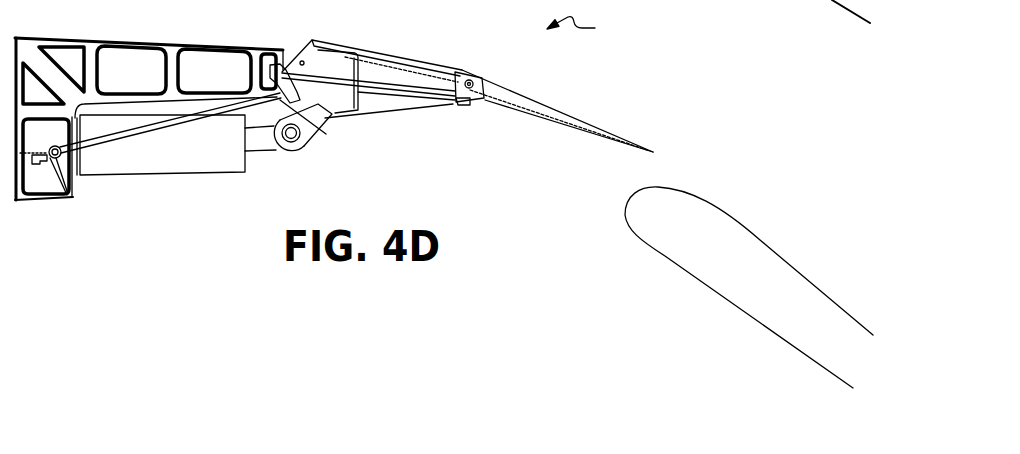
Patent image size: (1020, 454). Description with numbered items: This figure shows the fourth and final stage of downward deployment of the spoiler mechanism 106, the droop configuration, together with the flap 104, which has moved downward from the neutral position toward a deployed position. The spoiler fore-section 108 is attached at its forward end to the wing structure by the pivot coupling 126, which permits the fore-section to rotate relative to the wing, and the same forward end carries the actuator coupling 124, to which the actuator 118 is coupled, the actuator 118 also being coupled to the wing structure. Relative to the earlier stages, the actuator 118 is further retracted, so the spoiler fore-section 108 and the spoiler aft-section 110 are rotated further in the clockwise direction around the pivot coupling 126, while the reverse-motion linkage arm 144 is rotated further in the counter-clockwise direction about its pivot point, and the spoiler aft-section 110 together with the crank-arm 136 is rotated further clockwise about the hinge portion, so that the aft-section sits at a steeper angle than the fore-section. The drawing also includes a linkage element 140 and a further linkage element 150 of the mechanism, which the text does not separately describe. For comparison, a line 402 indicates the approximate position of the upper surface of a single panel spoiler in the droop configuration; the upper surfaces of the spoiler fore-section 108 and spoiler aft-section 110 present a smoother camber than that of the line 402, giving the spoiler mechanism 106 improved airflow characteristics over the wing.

The flap 104 is at (735, 212).
The spoiler mechanism 106 is at (594, 31).
The spoiler fore-section 108 is at (358, 43).
The spoiler aft-section 110 is at (530, 92).
The actuator 118 is at (203, 173).
The actuator coupling 124 is at (302, 152).
The pivot coupling 126 is at (293, 60).
The crank-arm 136 is at (452, 72).
The drive rod 140 is at (176, 123).
The reverse-motion linkage arm 144 is at (328, 128).
The link 150 is at (386, 97).
The line 402 is at (515, 113).